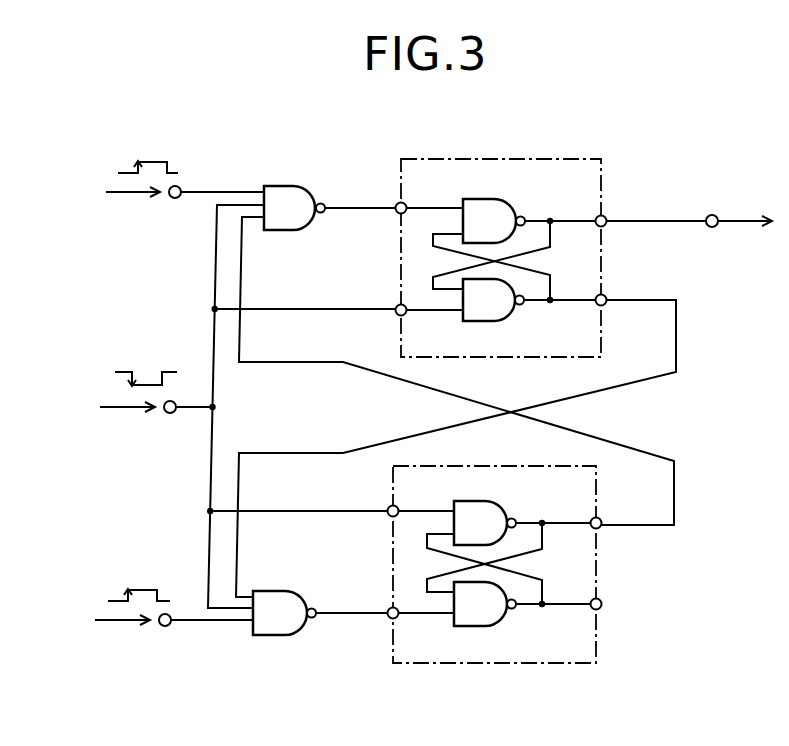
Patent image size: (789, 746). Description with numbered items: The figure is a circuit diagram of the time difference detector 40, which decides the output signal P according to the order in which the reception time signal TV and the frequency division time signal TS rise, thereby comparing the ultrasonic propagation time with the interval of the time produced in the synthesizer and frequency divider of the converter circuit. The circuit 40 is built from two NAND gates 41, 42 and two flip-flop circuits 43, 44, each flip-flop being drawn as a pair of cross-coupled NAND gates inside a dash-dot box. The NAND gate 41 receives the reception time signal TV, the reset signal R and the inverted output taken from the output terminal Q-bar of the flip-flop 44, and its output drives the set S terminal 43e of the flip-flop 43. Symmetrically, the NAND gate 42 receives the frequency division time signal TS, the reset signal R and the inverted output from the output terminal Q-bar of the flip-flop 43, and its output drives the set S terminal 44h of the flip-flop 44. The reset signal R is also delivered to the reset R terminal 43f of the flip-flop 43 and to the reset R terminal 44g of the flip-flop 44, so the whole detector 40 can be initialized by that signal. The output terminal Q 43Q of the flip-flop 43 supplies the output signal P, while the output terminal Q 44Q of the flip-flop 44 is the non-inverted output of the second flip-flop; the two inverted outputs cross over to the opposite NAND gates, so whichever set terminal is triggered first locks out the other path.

The time difference detector 40 is at (772, 378).
The NAND gate 41 is at (290, 186).
The NAND gate 42 is at (277, 591).
The flip-flop circuit 43 is at (561, 159).
The set S terminal 43e is at (397, 205).
The reset R terminal 43f is at (397, 306).
The output terminal Q 43Q is at (606, 217).
The flip-flop circuit 44 is at (525, 663).
The reset R terminal 44g is at (390, 507).
The set S terminal 44h is at (388, 608).
The output terminal Q 44Q is at (600, 610).